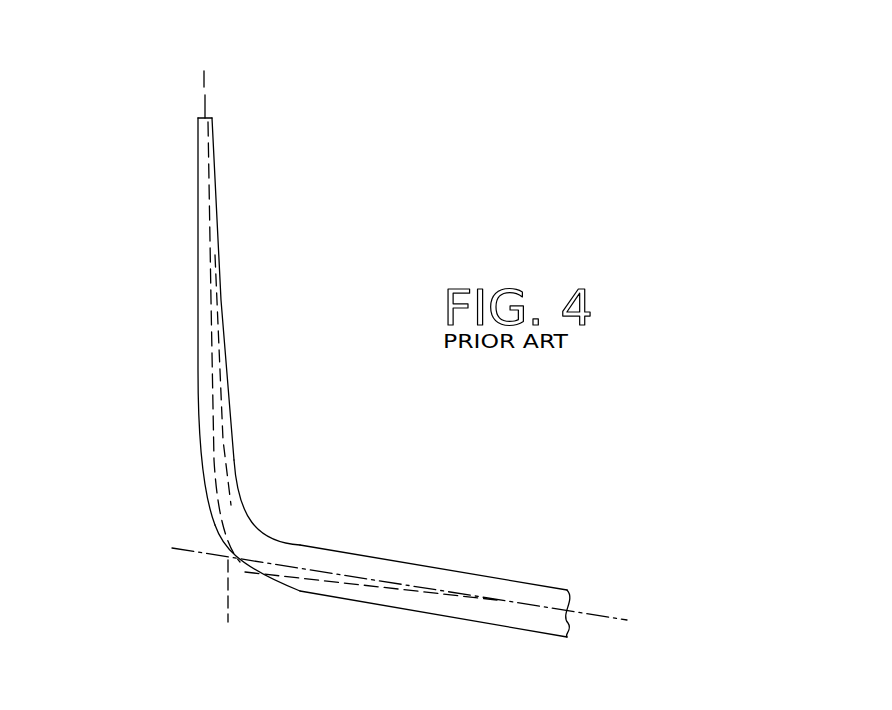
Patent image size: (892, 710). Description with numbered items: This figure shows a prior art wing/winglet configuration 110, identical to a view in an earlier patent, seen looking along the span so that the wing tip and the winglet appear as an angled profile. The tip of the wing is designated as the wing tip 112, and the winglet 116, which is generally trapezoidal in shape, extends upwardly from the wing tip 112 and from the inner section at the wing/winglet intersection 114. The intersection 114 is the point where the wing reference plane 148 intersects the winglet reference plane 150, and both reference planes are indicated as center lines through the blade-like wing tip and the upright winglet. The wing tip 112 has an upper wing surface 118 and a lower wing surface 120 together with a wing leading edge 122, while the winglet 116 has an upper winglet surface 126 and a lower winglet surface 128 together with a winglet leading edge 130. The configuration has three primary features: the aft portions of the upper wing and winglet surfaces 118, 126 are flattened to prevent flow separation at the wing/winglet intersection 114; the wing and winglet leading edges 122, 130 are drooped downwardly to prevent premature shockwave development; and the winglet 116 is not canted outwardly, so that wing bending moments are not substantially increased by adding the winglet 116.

The wing/winglet configuration 110 is at (185, 168).
The winglet 116 is at (185, 248).
The wing tip 112 is at (342, 612).
The wing/winglet intersection 114 is at (216, 563).
The upper wing surface 118 is at (510, 576).
The lower wing surface 120 is at (507, 628).
The wing leading edge 122 is at (437, 602).
The upper winglet surface 126 is at (219, 257).
The lower winglet surface 128 is at (198, 345).
The winglet leading edge 130 is at (210, 313).
The wing reference plane 148 is at (615, 620).
The winglet reference plane 150 is at (206, 79).